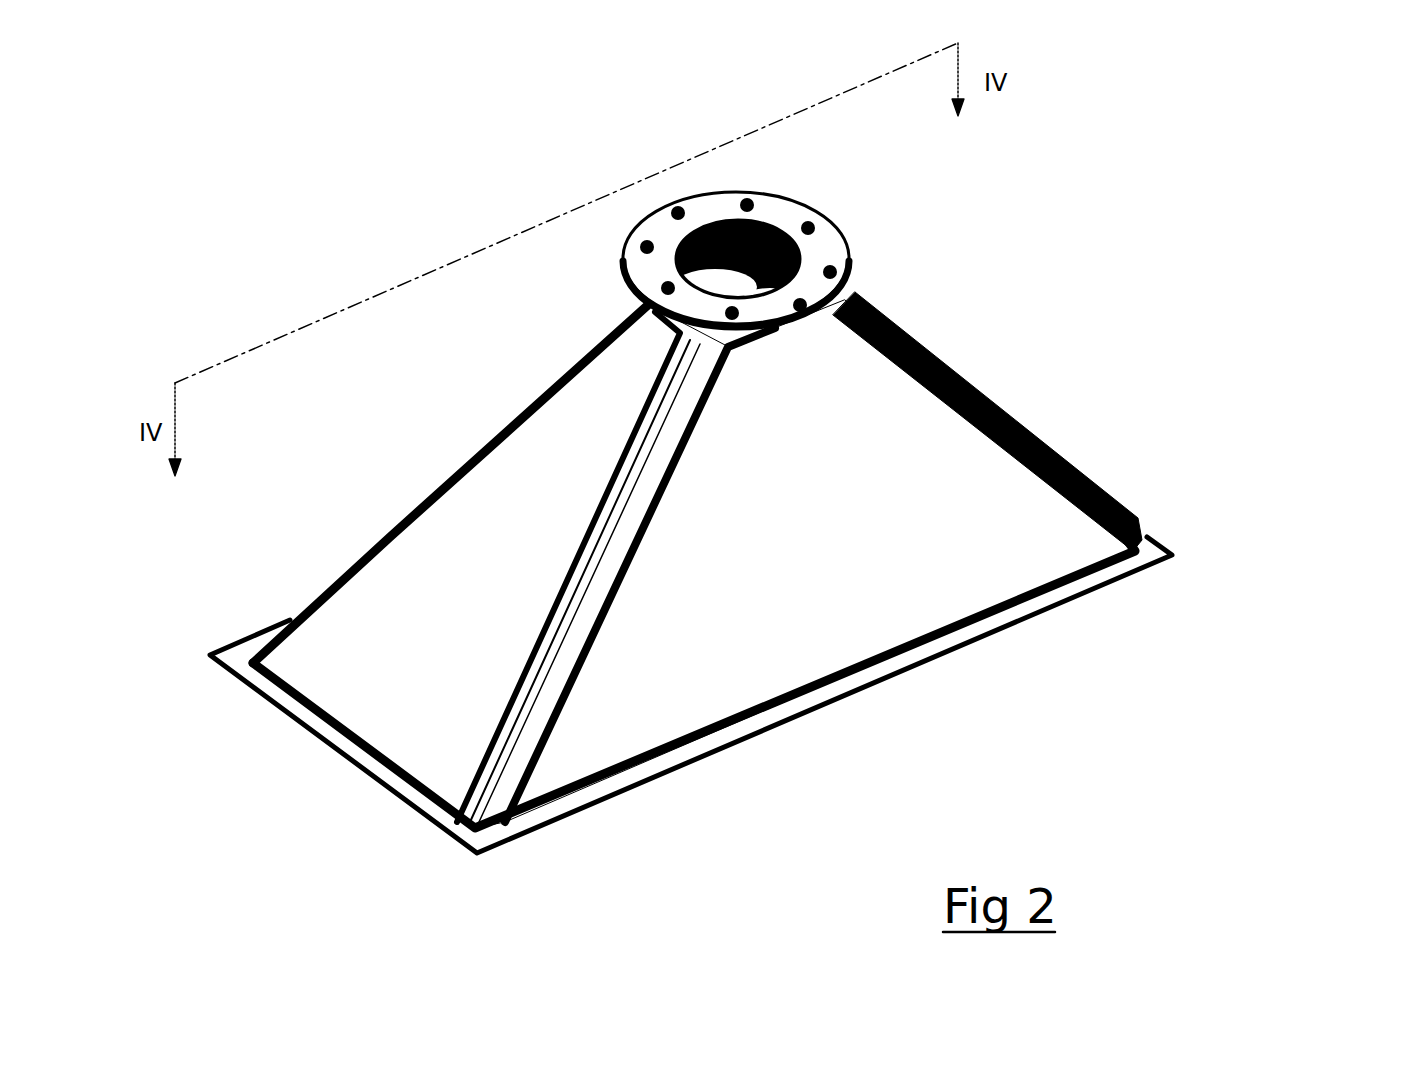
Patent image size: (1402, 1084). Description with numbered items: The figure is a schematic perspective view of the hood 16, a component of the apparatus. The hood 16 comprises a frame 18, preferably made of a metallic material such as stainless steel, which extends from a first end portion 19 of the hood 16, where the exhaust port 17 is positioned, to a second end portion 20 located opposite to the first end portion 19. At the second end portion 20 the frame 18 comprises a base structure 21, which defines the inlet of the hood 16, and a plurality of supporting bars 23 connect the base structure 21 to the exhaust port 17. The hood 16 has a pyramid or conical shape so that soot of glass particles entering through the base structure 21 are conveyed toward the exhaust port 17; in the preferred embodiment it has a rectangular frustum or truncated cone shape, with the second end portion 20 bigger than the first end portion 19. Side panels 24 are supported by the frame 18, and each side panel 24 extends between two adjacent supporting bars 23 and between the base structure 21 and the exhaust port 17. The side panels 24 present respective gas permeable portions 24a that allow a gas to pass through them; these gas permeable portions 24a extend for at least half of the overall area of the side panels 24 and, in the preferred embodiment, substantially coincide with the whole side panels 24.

The hood 16 is at (1182, 526).
The exhaust port 17 is at (820, 220).
The frame 18 is at (967, 377).
The first end portion 19 is at (632, 262).
The second end portion 20 is at (613, 803).
The base structure 21 is at (1020, 623).
The supporting bars 23 is at (517, 693).
The side panels 24 is at (420, 597).
The gas permeable portions 24a is at (512, 530).